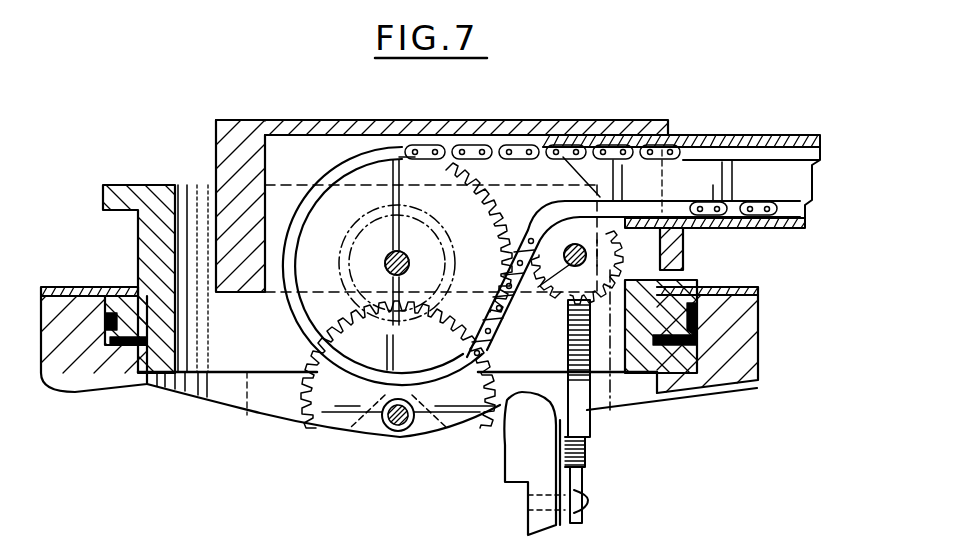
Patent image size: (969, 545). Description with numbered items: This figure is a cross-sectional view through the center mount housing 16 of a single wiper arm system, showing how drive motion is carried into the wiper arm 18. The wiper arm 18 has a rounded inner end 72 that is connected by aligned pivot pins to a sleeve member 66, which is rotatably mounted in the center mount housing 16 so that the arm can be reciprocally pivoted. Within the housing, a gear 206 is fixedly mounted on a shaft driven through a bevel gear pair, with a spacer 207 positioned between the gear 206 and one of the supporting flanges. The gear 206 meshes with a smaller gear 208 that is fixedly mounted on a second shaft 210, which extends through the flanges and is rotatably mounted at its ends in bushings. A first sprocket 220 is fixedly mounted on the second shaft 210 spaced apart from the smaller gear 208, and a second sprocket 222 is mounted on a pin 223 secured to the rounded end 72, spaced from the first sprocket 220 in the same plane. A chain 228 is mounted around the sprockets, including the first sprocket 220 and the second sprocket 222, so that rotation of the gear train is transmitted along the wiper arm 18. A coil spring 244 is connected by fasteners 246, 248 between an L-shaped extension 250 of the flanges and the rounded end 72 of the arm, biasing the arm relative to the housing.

The center mount housing 16 is at (278, 113).
The wiper arm 18 is at (740, 135).
The sleeve member 66 is at (138, 246).
The rounded inner end 72 is at (216, 143).
The gear 206 is at (315, 370).
The spacer 207 is at (385, 425).
The smaller gear 208 is at (336, 262).
The second shaft 210 is at (400, 250).
The first sprocket 220 is at (464, 180).
The second sprocket 222 is at (488, 336).
The pin 223 is at (562, 290).
The chain 228 is at (660, 147).
The coil spring 244 is at (588, 452).
The fastener 246 is at (586, 508).
The fastener 248 is at (604, 406).
The L-shaped extension 250 is at (684, 252).